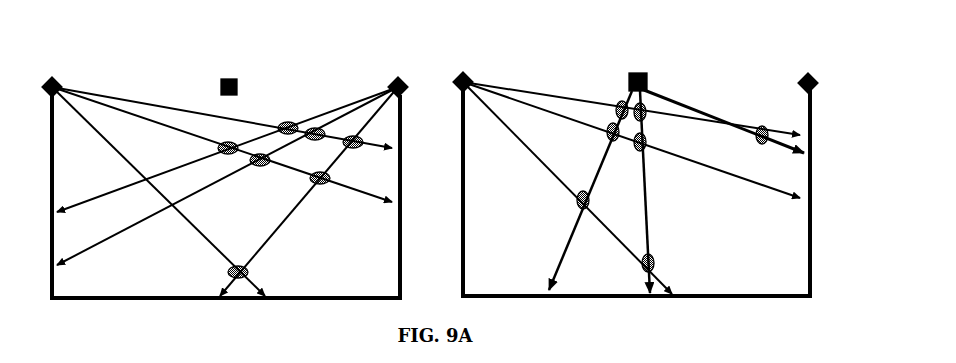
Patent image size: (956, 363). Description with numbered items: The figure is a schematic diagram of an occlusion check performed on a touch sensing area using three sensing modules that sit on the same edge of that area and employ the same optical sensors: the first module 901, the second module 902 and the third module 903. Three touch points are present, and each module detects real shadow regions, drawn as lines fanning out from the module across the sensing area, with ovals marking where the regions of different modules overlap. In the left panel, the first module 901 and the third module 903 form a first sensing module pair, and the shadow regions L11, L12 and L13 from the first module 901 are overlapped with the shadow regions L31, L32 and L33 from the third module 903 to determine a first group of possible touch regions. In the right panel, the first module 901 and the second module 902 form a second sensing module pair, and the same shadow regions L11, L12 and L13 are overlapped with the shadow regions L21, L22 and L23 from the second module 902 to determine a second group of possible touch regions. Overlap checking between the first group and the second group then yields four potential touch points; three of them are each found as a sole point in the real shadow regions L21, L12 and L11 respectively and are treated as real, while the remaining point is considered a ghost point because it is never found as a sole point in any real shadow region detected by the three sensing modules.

The module 1 901 is at (280, 61).
The module 2 902 is at (440, 60).
The module 3 903 is at (581, 61).
The real shadow region L11 is at (222, 116).
The real shadow region L12 is at (222, 144).
The real shadow region L13 is at (158, 191).
The real shadow region L31 is at (227, 149).
The real shadow region L32 is at (227, 176).
The real shadow region L33 is at (309, 191).
The real shadow region L21 is at (590, 190).
The real shadow region L22 is at (658, 192).
The real shadow region L23 is at (724, 120).